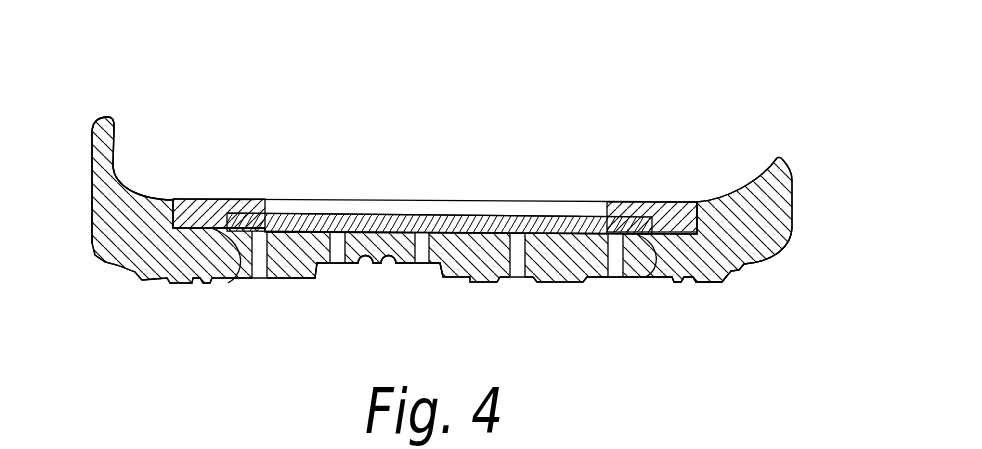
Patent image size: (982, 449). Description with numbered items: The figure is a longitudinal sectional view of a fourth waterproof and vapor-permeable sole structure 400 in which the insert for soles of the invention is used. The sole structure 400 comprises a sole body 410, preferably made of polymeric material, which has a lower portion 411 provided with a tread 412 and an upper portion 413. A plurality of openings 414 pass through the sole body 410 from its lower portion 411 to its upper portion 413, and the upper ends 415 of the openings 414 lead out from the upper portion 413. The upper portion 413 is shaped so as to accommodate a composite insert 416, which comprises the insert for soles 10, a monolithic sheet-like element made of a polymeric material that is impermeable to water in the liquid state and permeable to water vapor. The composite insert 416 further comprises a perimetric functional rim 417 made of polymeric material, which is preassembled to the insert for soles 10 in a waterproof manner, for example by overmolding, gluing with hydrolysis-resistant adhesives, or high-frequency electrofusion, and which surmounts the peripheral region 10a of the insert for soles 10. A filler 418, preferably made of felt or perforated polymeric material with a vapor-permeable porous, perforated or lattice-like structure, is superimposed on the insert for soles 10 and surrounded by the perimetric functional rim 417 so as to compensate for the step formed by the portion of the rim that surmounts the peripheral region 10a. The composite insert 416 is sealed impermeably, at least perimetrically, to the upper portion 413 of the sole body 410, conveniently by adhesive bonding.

The waterproof and vapor-permeable sole structure 400 is at (98, 268).
The sole body 410 is at (793, 203).
The lower portion 411 is at (718, 270).
The tread 412 is at (287, 285).
The upper portion 413 is at (155, 197).
The openings 414 is at (256, 272).
The upper ends 415 is at (414, 210).
The composite insert 416 is at (677, 204).
The perimetric functional rim 417 is at (214, 205).
The filler 418 is at (441, 205).
The insert for soles 10 is at (488, 219).
The peripheral region 10a is at (215, 277).